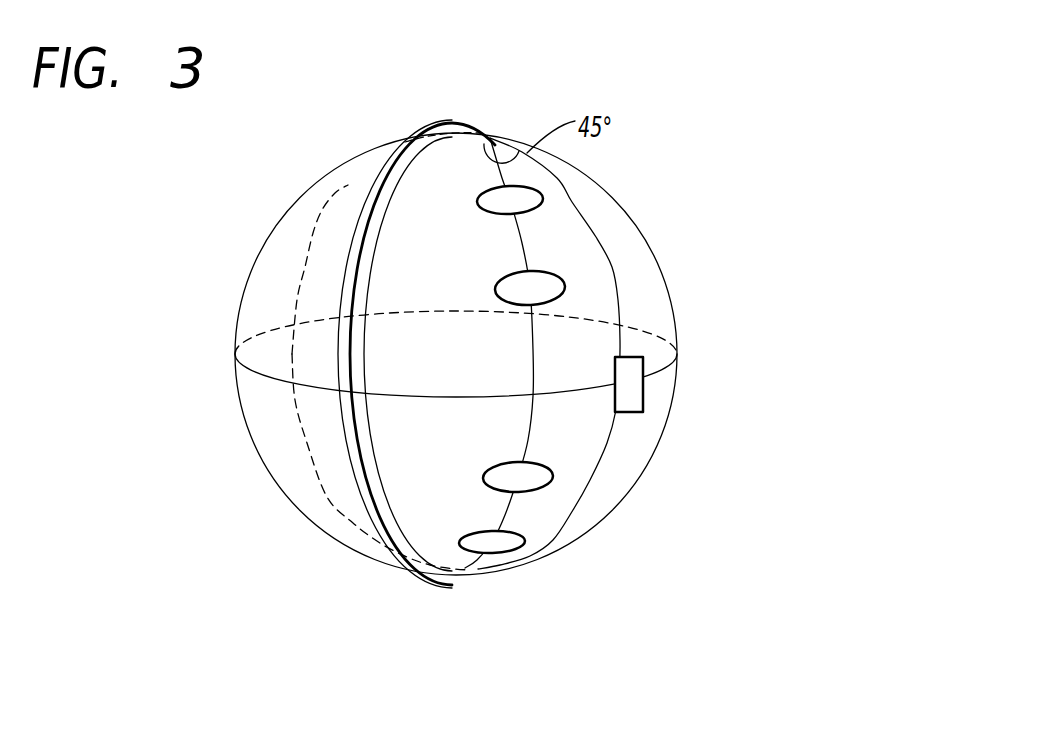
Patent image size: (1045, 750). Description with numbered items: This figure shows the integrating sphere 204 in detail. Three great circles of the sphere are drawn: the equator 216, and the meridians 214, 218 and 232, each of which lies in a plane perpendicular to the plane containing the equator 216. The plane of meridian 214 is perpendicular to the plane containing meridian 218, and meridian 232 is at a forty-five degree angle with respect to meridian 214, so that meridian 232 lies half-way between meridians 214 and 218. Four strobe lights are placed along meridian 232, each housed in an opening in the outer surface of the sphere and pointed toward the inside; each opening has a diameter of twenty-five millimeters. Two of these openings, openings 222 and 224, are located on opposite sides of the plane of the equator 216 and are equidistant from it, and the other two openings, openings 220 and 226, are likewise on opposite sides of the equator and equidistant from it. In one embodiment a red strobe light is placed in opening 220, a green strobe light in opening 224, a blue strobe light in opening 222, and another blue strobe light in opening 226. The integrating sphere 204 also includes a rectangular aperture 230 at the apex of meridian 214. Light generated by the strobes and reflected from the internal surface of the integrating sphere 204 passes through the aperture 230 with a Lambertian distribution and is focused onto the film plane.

The integrating sphere 204 is at (722, 98).
The meridian 214 is at (337, 192).
The equator 216 is at (273, 377).
The meridian 218 is at (380, 178).
The opening 220 is at (545, 198).
The opening 222 is at (553, 473).
The opening 224 is at (566, 288).
The opening 226 is at (499, 563).
The rectangular aperture 230 is at (643, 391).
The meridian 232 is at (490, 138).